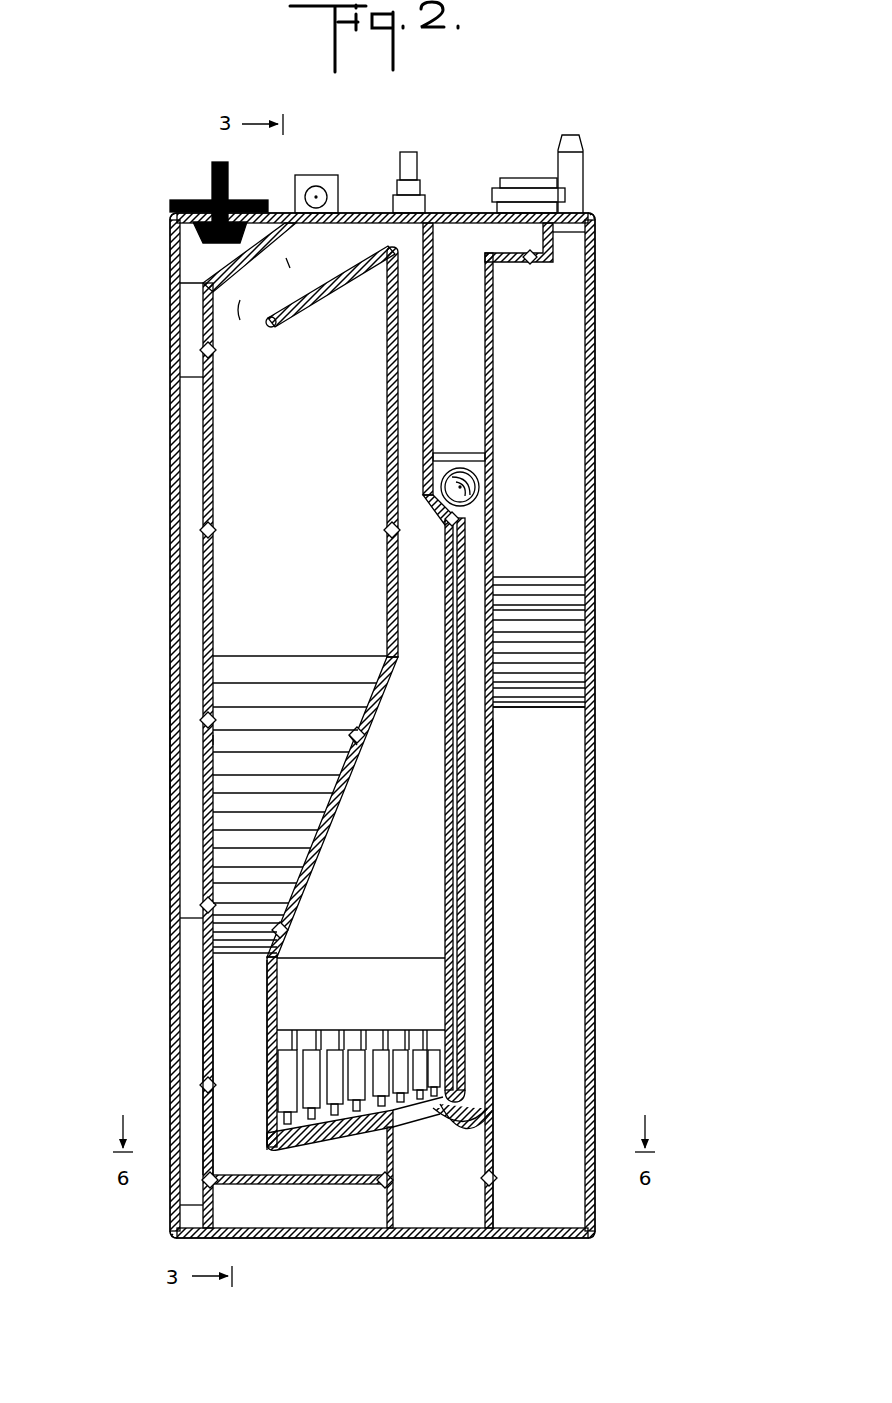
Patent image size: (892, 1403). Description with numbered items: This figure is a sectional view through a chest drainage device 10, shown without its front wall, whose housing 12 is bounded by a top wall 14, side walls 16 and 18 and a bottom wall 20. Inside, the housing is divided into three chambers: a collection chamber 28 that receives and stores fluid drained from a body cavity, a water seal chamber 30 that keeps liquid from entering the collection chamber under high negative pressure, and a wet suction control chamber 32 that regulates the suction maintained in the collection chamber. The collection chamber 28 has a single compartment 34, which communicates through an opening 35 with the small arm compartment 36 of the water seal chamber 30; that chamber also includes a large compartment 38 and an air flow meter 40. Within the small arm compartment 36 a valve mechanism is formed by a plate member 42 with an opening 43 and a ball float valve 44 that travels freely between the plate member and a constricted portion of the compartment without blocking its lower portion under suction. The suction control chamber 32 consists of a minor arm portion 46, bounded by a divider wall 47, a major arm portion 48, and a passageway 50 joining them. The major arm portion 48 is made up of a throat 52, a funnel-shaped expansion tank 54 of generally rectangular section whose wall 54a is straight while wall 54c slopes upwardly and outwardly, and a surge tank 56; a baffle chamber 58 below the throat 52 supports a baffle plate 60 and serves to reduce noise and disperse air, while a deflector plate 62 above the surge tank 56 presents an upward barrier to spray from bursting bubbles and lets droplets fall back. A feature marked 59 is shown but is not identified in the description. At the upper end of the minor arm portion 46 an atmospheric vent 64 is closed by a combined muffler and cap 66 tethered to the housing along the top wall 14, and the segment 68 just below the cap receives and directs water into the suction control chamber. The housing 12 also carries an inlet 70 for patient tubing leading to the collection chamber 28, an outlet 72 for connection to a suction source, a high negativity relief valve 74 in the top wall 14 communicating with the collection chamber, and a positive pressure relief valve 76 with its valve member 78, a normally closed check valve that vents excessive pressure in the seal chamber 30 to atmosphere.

The chest drainage device 10 is at (632, 150).
The housing 12 is at (596, 362).
The top wall 14 is at (455, 213).
The side wall 16 is at (170, 640).
The side wall 18 is at (596, 606).
The bottom wall 20 is at (430, 1240).
The collection chamber 28 is at (597, 722).
The water seal chamber 30 is at (497, 1008).
The wet suction control chamber 32 is at (168, 780).
The compartment 34 is at (518, 923).
The opening 35 is at (585, 229).
The small arm compartment 36 is at (478, 973).
The large compartment 38 is at (369, 841).
The air flow meter 40 is at (238, 1073).
The plate member 42 is at (478, 452).
The opening 43 is at (450, 452).
The ball float valve 44 is at (471, 486).
The minor arm portion 46 is at (180, 918).
The divider wall 47 is at (213, 370).
The major arm portion 48 is at (226, 452).
The passageway 50 is at (203, 1206).
The throat 52 is at (228, 1016).
The expansion tank 54 is at (263, 811).
The wall 54a is at (224, 738).
The wall 54c is at (352, 744).
The surge tank 56 is at (323, 494).
The baffle chamber 58 is at (278, 1216).
The water level line 59 is at (289, 655).
The baffle plate 60 is at (322, 1184).
The deflector plate 62 is at (306, 292).
The atmospheric vent 64 is at (163, 206).
The combined muffler and cap 66 is at (203, 205).
The segment 68 is at (190, 258).
The inlet 70 is at (584, 178).
The outlet 72 is at (417, 160).
The high negativity relief valve 74 is at (502, 178).
The positive pressure relief valve 76 is at (318, 177).
The valve member 78 is at (327, 194).